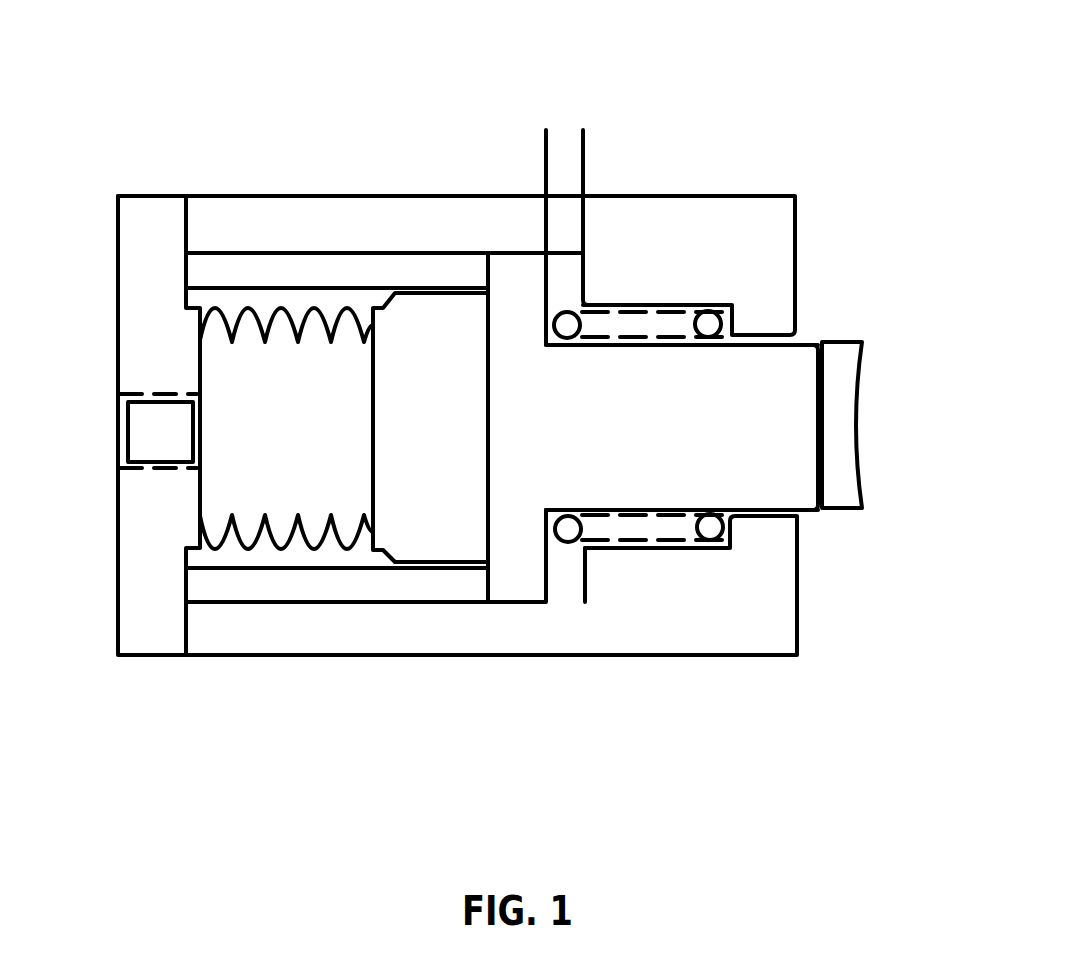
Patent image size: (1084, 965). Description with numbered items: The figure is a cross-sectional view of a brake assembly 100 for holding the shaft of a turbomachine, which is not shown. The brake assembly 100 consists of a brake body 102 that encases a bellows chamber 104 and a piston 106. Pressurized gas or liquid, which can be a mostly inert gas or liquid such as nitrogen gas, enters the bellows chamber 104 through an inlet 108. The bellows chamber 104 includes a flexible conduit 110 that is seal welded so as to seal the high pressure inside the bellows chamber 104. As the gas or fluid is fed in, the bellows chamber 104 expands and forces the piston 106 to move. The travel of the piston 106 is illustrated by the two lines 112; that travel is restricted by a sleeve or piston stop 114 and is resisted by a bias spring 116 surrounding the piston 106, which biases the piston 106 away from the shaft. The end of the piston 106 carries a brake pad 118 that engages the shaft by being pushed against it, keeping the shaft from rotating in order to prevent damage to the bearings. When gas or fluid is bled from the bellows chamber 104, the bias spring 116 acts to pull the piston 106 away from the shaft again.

The brake assembly 100 is at (458, 86).
The brake body 102 is at (772, 247).
The bellows chamber 104 is at (328, 487).
The piston 106 is at (770, 463).
The inlet 108 is at (148, 430).
The flexible conduit 110 is at (273, 537).
The two lines 112 is at (568, 168).
The sleeve or piston stop 114 is at (333, 268).
The bias spring 116 is at (637, 530).
The brake pad 118 is at (832, 430).